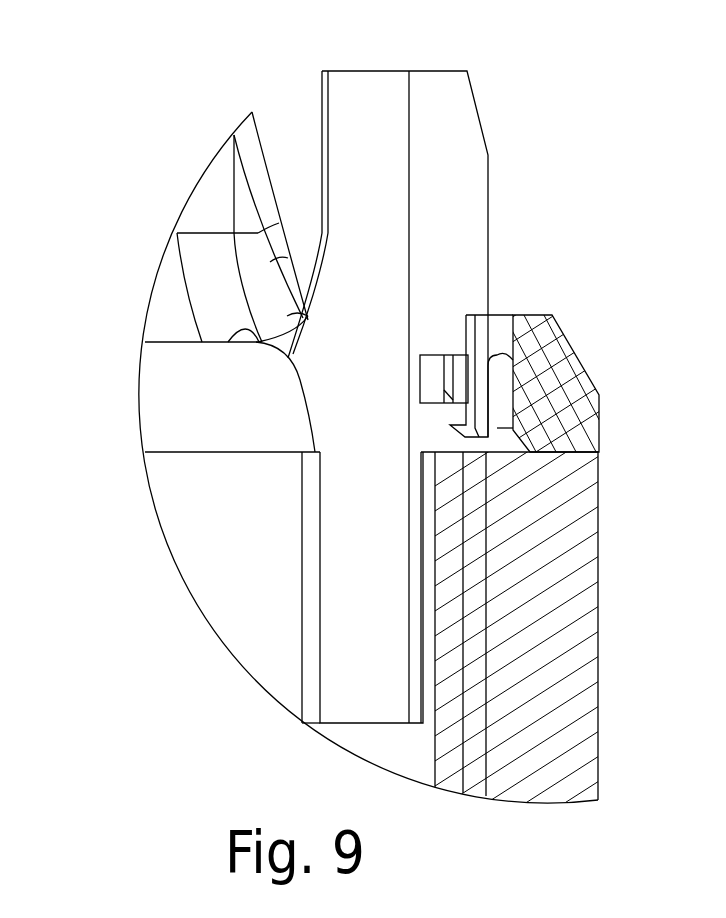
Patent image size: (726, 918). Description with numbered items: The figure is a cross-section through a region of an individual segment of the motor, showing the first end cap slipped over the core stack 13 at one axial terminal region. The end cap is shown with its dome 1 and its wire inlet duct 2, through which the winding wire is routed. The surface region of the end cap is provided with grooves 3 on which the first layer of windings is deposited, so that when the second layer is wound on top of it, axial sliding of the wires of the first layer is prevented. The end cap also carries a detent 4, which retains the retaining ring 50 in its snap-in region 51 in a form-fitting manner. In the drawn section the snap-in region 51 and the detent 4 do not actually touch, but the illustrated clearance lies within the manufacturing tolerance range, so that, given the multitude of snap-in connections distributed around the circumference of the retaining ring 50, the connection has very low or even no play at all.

The dome 1 is at (428, 160).
The wire inlet duct 2 is at (248, 333).
The grooves 3 is at (202, 400).
The detent 4 is at (458, 383).
The snap-in region 51 is at (482, 408).
The retaining ring 50 is at (578, 423).
The core stack 13 is at (522, 530).